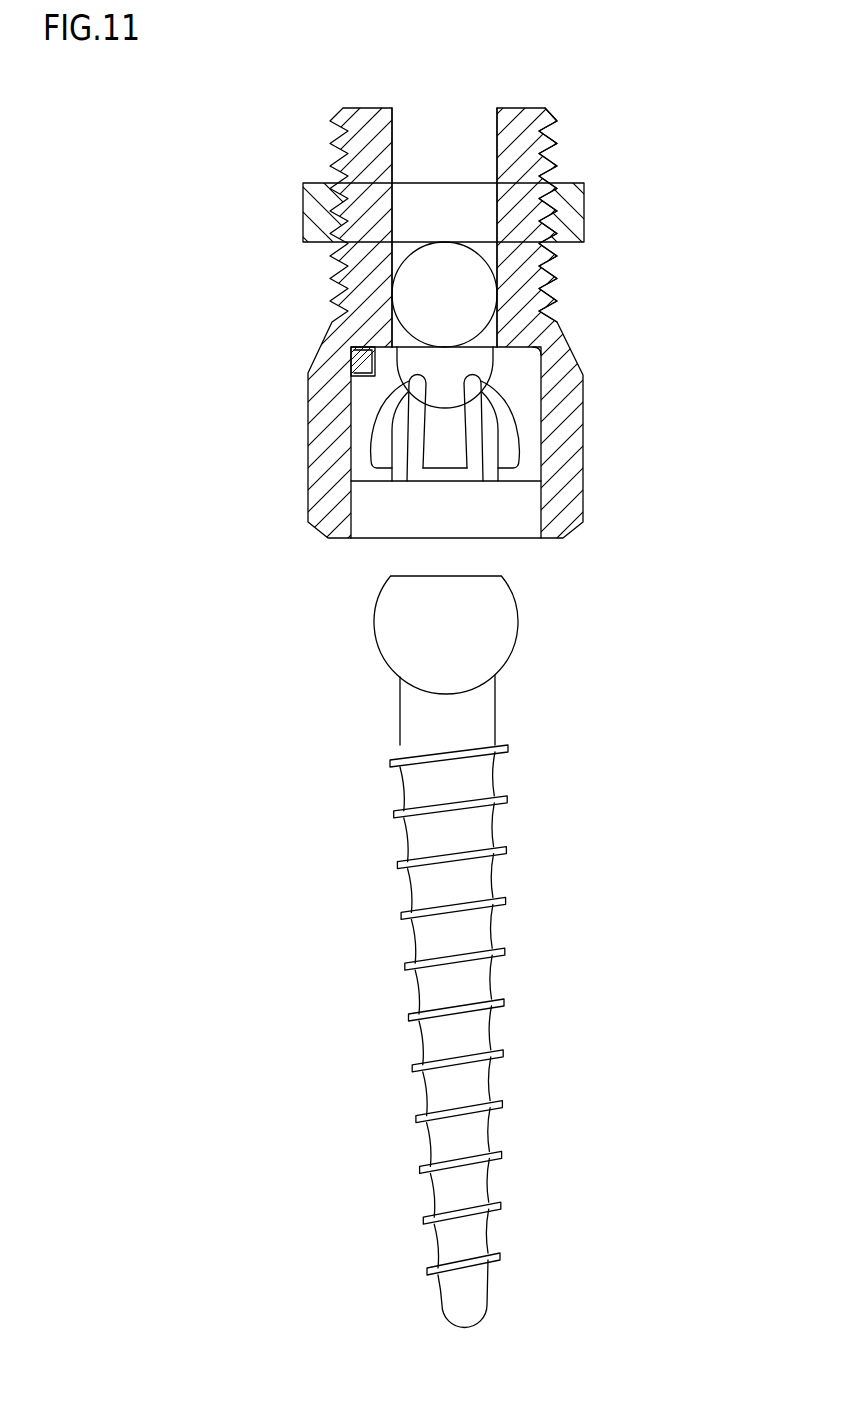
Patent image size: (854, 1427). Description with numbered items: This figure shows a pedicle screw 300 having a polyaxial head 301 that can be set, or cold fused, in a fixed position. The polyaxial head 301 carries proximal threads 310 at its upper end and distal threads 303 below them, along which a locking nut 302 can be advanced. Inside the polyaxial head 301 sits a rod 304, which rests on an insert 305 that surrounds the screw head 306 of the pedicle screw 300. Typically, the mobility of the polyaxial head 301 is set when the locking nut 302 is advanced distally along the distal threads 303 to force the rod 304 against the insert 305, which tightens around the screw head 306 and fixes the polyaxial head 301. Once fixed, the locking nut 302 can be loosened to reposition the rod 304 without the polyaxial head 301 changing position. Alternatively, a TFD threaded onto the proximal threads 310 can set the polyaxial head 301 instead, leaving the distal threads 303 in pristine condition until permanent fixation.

The pedicle screw 300 is at (598, 952).
The polyaxial head 301 is at (582, 422).
The locking nut 302 is at (587, 203).
The distal threads 303 is at (552, 268).
The rod 304 is at (394, 276).
The insert 305 is at (525, 455).
The screw head 306 is at (500, 612).
The proximal threads 310 is at (543, 111).